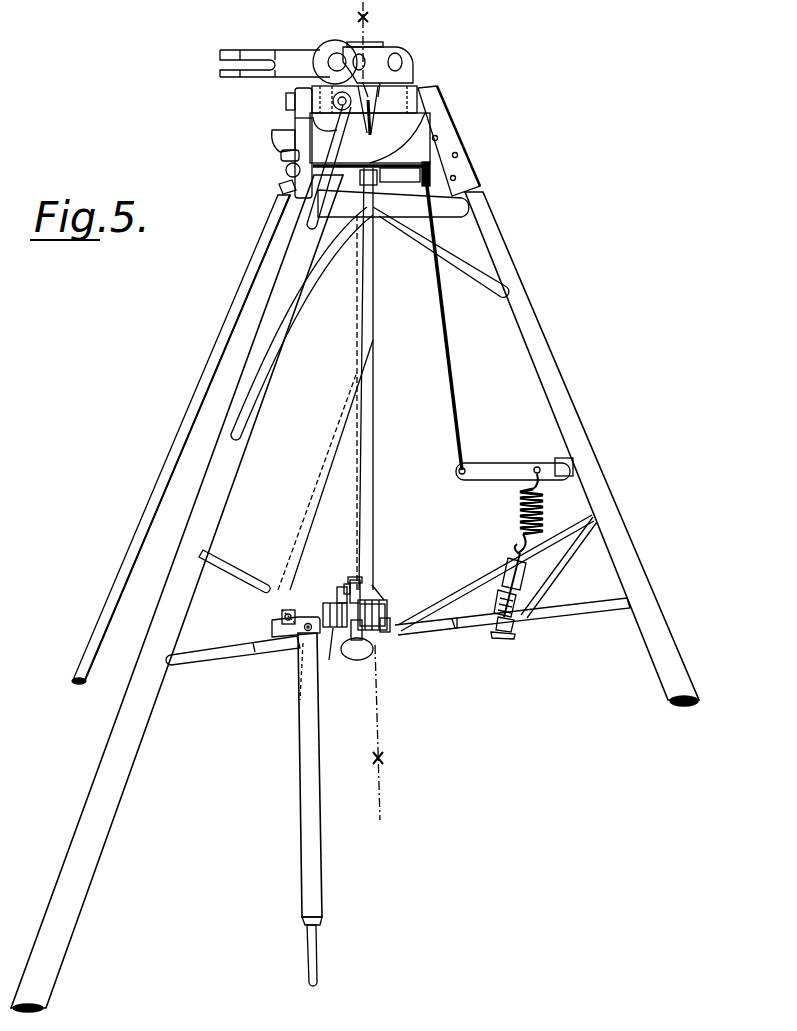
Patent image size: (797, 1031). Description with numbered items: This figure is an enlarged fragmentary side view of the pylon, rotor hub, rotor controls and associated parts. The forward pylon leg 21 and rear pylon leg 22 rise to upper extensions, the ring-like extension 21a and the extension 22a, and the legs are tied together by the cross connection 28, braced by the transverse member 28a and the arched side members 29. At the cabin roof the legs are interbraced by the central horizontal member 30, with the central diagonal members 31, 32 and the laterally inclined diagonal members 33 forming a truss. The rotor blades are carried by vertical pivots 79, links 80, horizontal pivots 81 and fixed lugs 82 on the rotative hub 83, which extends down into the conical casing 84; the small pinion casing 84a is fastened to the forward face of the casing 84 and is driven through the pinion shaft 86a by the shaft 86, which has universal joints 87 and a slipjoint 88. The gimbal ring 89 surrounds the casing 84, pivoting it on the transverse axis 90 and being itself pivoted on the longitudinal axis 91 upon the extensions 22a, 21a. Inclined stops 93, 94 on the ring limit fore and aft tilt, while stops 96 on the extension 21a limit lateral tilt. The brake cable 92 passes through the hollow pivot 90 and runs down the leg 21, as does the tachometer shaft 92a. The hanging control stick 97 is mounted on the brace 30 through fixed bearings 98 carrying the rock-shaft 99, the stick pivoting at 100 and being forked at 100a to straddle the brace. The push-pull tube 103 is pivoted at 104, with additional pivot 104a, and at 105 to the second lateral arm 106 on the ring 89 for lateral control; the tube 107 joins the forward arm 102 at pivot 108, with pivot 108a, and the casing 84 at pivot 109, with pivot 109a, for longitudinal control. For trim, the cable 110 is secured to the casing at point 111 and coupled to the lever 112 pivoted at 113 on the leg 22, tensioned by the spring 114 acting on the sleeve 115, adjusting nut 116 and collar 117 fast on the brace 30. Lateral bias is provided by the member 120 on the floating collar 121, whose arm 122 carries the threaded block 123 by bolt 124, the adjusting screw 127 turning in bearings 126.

The forward pylon leg 21 is at (168, 600).
The ring-like upper extension of the forward pylon leg 21a is at (295, 122).
The rear pylon leg 22 is at (560, 376).
The upper extension of the rear pylon leg 22a is at (462, 165).
The cross connection 28 is at (441, 252).
The transverse member 28a is at (300, 206).
The arched side members 29 is at (430, 240).
The central horizontal member 30 is at (574, 614).
The central diagonal member 31 is at (476, 576).
The central diagonal member 32 is at (560, 568).
The laterally inclined diagonal members 33 is at (226, 563).
The vertical pivots 79 is at (230, 66).
The links 80 is at (302, 50).
The horizontal pivots 81 is at (337, 53).
The fixed lugs or ears 82 is at (405, 50).
The rotative hub or spindle 83 is at (370, 42).
The conical casing 84 is at (427, 118).
The small casing 84a is at (276, 145).
The shaft 86 is at (253, 252).
The pinion shaft 86a is at (281, 158).
The universal joints 87 is at (279, 188).
The slipjoint 88 is at (286, 171).
The gimbal ring 89 is at (416, 86).
The transverse pivot axis 90 is at (333, 91).
The longitudinal pivot axis 91 is at (286, 103).
The flexible tube-enclosed cable 92 is at (340, 135).
The flexible tachometer shaft 92a is at (312, 298).
The inclined rotor tilting stop 93 is at (420, 90).
The inclined rotor tilting stop 94 is at (310, 92).
The stops 96 is at (325, 126).
The hanging control stick 97 is at (300, 790).
The fixed bearings 98 is at (394, 607).
The rock-shaft 99 is at (325, 606).
The stick pivot 100 is at (295, 632).
The forked upper end 100a is at (280, 677).
The forwardly extending arm 102 is at (304, 628).
The push-pull tube 103 is at (376, 414).
The pivot 104 is at (380, 600).
The additional pivot 104a is at (395, 585).
The pivot 105 is at (373, 128).
The second lateral arm 106 is at (385, 114).
The tube 107 is at (332, 444).
The pivot 108 is at (282, 615).
The additional pivot 108a is at (284, 608).
The pivot 109 is at (370, 139).
The additional pivot 109a is at (390, 179).
The cable 110 is at (452, 352).
The cable attachment point 111 is at (440, 145).
The lever 112 is at (480, 463).
The lever pivot 113 is at (558, 458).
The spring 114 is at (520, 510).
The sleeve 115 is at (521, 560).
The adjusting nut 116 is at (502, 638).
The collar 117 is at (508, 626).
The member 120 is at (338, 588).
The collar 121 is at (333, 640).
The arm 122 is at (355, 577).
The internally threaded block 123 is at (360, 585).
The screw or bolt 124 is at (348, 584).
The bearings 126 is at (358, 578).
The adjusting screw 127 is at (362, 660).